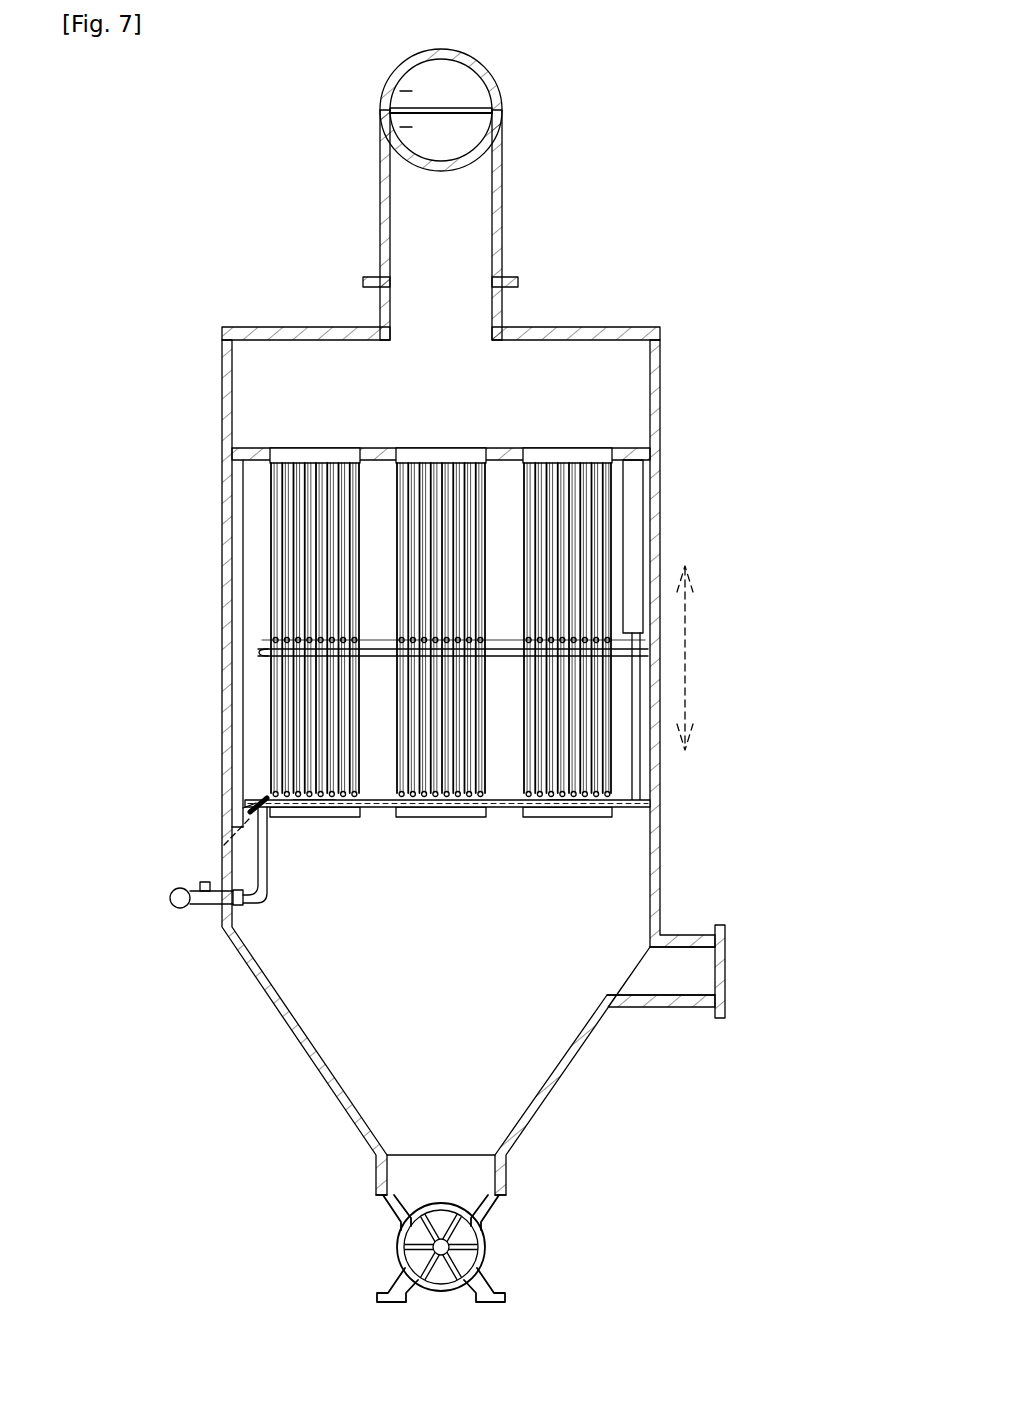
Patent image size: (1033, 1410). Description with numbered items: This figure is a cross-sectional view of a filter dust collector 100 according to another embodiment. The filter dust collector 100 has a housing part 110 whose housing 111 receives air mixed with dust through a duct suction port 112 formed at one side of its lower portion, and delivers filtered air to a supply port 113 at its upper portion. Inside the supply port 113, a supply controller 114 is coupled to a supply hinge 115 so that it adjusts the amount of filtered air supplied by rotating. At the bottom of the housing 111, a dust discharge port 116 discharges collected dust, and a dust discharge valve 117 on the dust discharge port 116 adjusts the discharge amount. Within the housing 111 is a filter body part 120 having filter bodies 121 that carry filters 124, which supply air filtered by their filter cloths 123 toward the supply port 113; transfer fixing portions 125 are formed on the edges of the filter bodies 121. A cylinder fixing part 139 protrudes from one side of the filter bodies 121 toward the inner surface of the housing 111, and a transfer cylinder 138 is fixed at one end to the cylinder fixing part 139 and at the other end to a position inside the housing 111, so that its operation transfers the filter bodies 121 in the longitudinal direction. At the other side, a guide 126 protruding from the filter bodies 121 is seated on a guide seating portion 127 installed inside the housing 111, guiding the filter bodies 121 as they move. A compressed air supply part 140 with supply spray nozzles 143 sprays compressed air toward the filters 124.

The filter dust collector 100 is at (134, 148).
The housing part 110 is at (218, 324).
The housing 111 is at (265, 336).
The duct suction port 112 is at (660, 1008).
The supply port 113 is at (502, 165).
The supply controller 114 is at (407, 91).
The supply hinge 115 is at (472, 108).
The dust discharge port 116 is at (506, 1162).
The dust discharge valve 117 is at (486, 1247).
The filter body part 120 is at (602, 820).
The filter bodies 121 is at (373, 818).
The filter cloths 123 is at (612, 492).
The filters 124 is at (592, 460).
The transfer fixing portions 125 is at (553, 815).
The guide 126 is at (256, 803).
The guide seating portion 127 is at (258, 800).
The transfer cylinder 138 is at (636, 543).
The cylinder fixing part 139 is at (642, 819).
The compressed air supply part 140 is at (248, 840).
The supply spray nozzles 143 is at (268, 790).